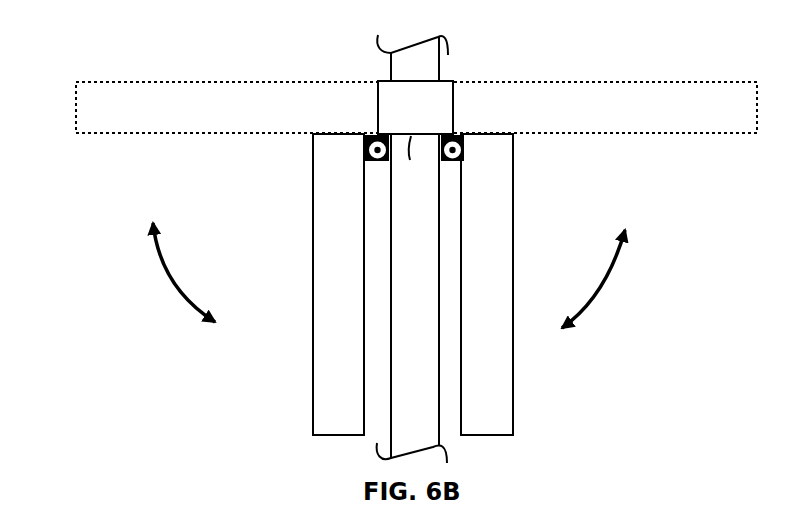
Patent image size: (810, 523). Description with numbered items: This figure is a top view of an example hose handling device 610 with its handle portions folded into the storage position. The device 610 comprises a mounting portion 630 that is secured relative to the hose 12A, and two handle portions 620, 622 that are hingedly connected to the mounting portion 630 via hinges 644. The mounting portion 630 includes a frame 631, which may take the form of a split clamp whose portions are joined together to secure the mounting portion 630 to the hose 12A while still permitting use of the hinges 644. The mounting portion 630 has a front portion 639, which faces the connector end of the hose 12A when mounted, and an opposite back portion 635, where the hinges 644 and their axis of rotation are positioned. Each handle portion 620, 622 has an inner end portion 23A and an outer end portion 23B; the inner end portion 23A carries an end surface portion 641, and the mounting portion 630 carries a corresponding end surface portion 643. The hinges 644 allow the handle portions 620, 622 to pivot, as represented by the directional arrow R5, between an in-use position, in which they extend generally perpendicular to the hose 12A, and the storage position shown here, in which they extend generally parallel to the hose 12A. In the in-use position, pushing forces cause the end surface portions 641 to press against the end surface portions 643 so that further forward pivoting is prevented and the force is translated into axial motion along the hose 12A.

The hose handling device 610 is at (260, 65).
The handle portion 620 is at (118, 136).
The handle portion 622 is at (699, 143).
The mounting portion 630 is at (430, 95).
The frame 631 is at (443, 114).
The back portion 635 is at (410, 160).
The front portion 639 is at (420, 79).
The end surface portion 641 is at (313, 133).
The end surface portion 643 is at (377, 90).
The hinges 644 is at (375, 133).
The inner end portion 23A is at (355, 205).
The outer end portion 23B is at (357, 401).
The hose 12A is at (433, 326).
The directional arrow R5 is at (390, 275).